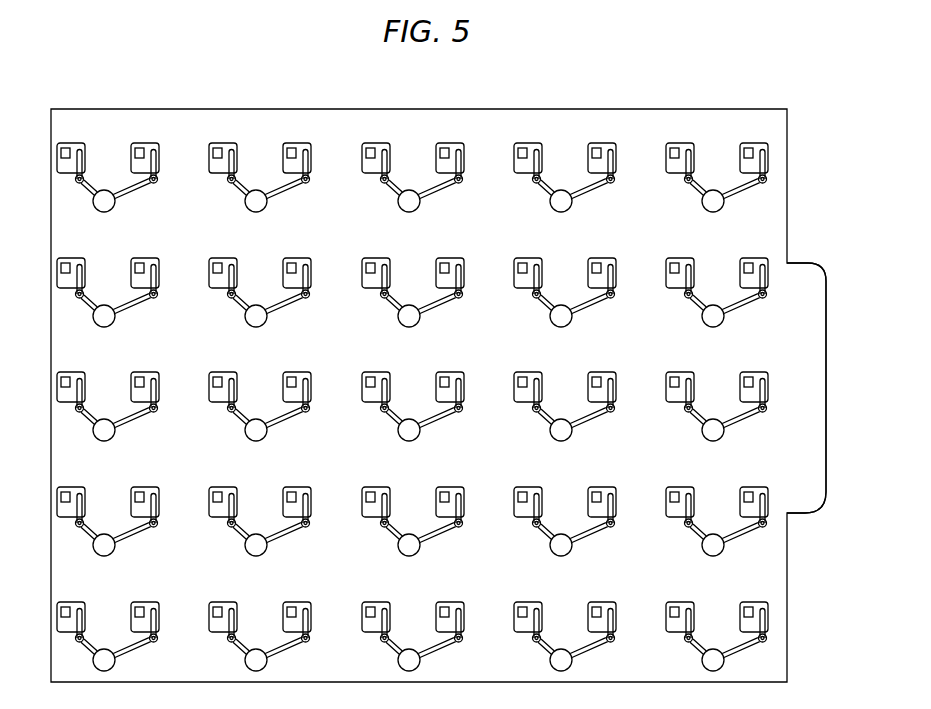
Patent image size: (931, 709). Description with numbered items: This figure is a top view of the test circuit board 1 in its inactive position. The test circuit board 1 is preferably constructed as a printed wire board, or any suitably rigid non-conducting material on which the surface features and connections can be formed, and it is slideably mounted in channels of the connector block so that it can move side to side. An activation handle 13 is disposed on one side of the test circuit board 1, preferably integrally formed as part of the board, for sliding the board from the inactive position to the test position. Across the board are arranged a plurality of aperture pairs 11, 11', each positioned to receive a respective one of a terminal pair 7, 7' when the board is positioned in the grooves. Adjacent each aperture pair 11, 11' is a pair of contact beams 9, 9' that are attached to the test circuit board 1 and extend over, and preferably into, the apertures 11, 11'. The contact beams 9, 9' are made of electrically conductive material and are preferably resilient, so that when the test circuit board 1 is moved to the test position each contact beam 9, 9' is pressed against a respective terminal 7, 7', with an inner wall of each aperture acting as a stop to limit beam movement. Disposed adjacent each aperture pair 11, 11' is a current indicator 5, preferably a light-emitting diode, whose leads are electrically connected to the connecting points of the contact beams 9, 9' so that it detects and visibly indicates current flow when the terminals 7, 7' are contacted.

The test circuit board 1 is at (640, 109).
The current indicator 5 is at (252, 205).
The terminal 7 is at (200, 108).
The terminal 7' is at (314, 108).
The contact beam 9 is at (209, 181).
The contact beam 9' is at (354, 131).
The aperture 11 is at (177, 129).
The aperture 11' is at (323, 179).
The activation handle 13 is at (797, 282).